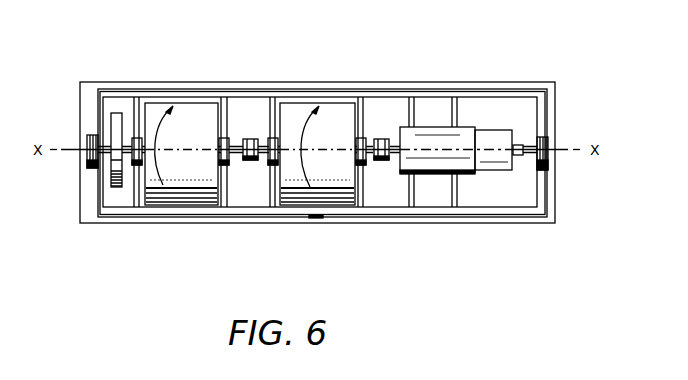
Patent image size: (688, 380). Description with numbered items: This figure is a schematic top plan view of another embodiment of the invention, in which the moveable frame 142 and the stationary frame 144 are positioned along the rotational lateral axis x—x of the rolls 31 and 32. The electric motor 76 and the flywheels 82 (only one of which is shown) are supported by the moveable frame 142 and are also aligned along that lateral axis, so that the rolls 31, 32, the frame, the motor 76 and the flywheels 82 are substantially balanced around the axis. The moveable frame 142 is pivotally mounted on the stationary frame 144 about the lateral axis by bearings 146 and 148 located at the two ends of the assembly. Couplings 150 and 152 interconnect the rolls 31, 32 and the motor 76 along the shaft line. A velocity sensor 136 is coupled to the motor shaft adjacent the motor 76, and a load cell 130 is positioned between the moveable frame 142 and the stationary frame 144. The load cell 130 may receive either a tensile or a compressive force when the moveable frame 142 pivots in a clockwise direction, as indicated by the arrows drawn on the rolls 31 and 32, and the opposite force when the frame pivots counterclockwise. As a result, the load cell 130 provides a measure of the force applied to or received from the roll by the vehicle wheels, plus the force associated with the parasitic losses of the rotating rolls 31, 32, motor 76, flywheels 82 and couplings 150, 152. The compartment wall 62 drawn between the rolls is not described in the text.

The bearing 146 is at (92, 134).
The flywheel 82 is at (117, 113).
The roll 32 is at (176, 100).
The partition frame 62 is at (255, 105).
The roll 31 is at (315, 100).
The stationary frame 144 is at (445, 82).
The moveable frame 142 is at (487, 96).
The velocity sensor 136 is at (520, 144).
The bearing 148 is at (548, 140).
The coupling 150 is at (250, 161).
The coupling 152 is at (381, 161).
The electric motor 76 is at (437, 175).
The load cell 130 is at (315, 218).